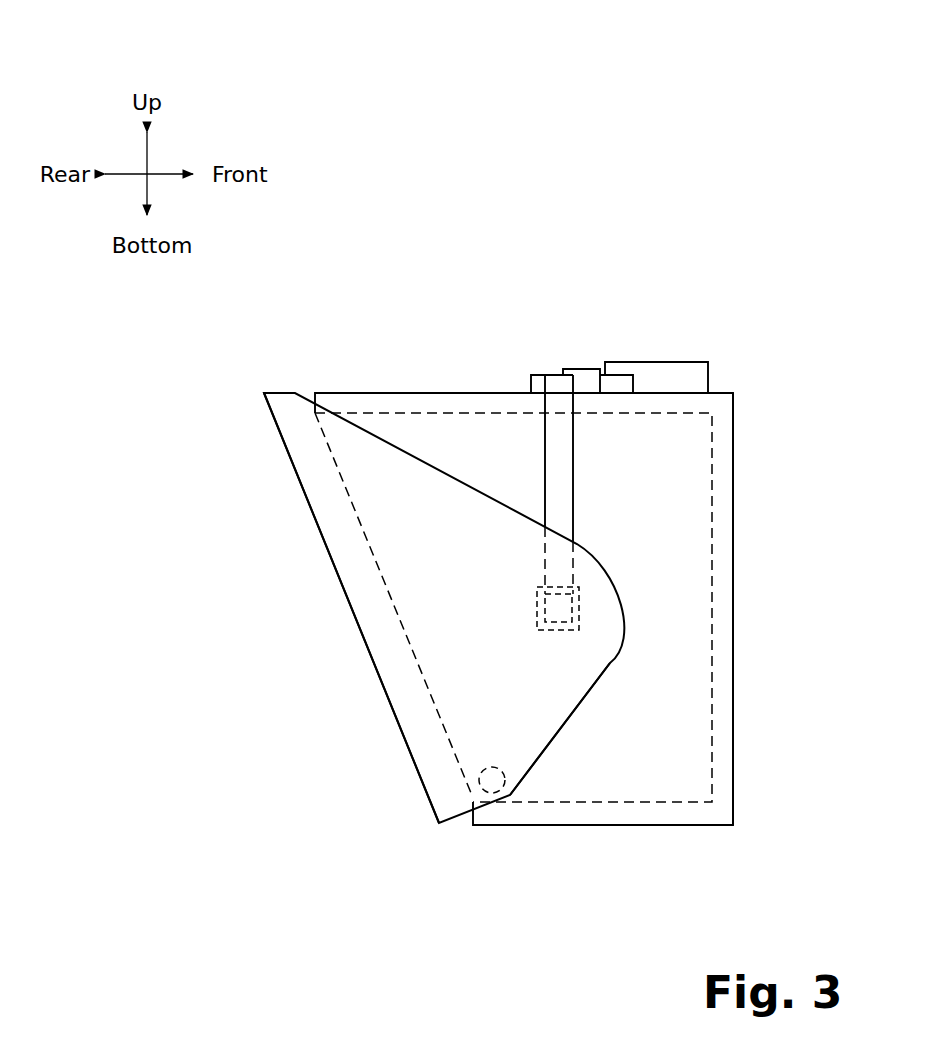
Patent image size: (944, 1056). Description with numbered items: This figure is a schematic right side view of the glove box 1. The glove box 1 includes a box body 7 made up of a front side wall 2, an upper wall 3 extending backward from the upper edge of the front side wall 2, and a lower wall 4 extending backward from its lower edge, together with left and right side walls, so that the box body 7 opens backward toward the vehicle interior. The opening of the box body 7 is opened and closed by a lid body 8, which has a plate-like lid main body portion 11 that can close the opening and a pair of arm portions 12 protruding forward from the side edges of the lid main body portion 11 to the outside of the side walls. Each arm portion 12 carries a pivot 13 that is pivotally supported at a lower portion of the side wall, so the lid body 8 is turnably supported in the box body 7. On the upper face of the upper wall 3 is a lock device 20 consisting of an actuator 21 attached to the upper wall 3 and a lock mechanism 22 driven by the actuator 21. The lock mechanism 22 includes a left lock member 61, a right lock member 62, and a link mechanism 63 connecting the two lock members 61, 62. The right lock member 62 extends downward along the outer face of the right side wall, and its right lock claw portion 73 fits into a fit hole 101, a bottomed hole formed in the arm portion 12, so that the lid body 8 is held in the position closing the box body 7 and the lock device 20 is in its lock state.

The glove box 1 is at (391, 322).
The front side wall 2 is at (724, 537).
The upper wall 3 is at (438, 397).
The lower wall 4 is at (673, 819).
The box body 7 is at (740, 798).
The lid body 8 is at (359, 649).
The lid main body portion 11 is at (340, 568).
The arm portion 12 is at (542, 732).
The pivot 13 is at (480, 780).
The lock device 20 is at (569, 328).
The actuator 21 is at (696, 354).
The lock mechanism 22 is at (544, 366).
The left lock member 61 is at (636, 369).
The right lock member 62 is at (577, 477).
The link mechanism 63 is at (583, 364).
The right lock claw portion 73 is at (566, 602).
The fit hole 101 is at (576, 631).